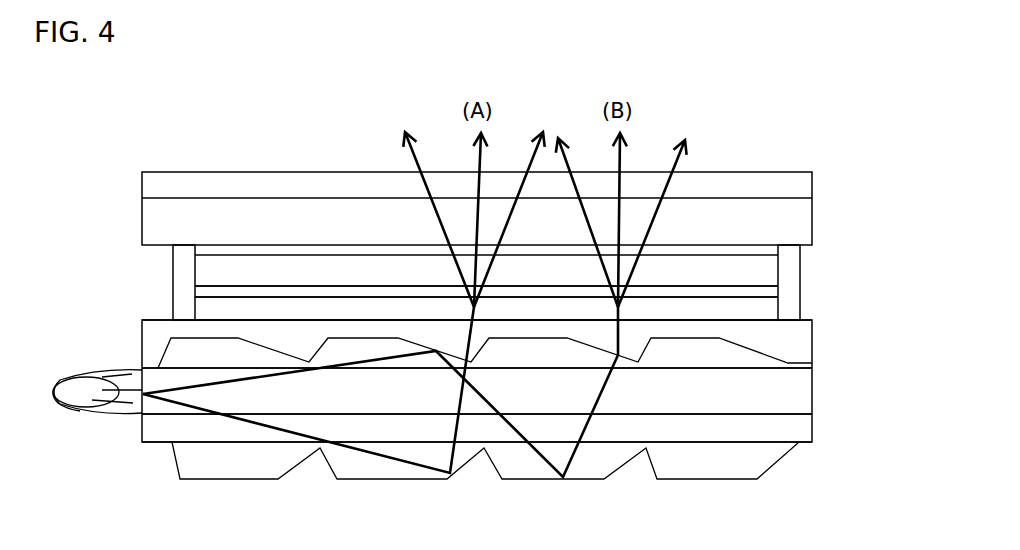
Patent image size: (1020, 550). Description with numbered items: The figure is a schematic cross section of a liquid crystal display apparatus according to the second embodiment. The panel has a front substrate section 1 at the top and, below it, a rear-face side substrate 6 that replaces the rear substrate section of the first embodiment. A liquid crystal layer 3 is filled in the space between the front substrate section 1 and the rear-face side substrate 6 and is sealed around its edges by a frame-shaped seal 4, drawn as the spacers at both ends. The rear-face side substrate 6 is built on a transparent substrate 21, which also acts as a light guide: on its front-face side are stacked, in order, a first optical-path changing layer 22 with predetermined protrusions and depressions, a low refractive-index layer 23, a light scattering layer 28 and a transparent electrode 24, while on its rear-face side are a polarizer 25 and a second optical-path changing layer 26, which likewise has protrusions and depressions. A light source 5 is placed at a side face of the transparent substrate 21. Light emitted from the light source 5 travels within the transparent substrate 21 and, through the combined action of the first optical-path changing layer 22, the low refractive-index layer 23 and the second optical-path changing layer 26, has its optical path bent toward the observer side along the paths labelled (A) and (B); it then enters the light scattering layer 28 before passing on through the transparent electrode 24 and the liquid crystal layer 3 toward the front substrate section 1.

The front substrate section 1 is at (855, 205).
The liquid crystal layer 3 is at (200, 273).
The seal 4 is at (178, 300).
The light source 5 is at (65, 377).
The rear-face side substrate 6 is at (531, 373).
The transparent substrate 21 is at (805, 390).
The first optical-path changing layer 22 is at (775, 360).
The low refractive-index layer 23 is at (805, 335).
The transparent electrode 24 is at (778, 293).
The polarizer 25 is at (805, 425).
The second optical-path changing layer 26 is at (527, 460).
The light scattering layer 28 is at (778, 313).